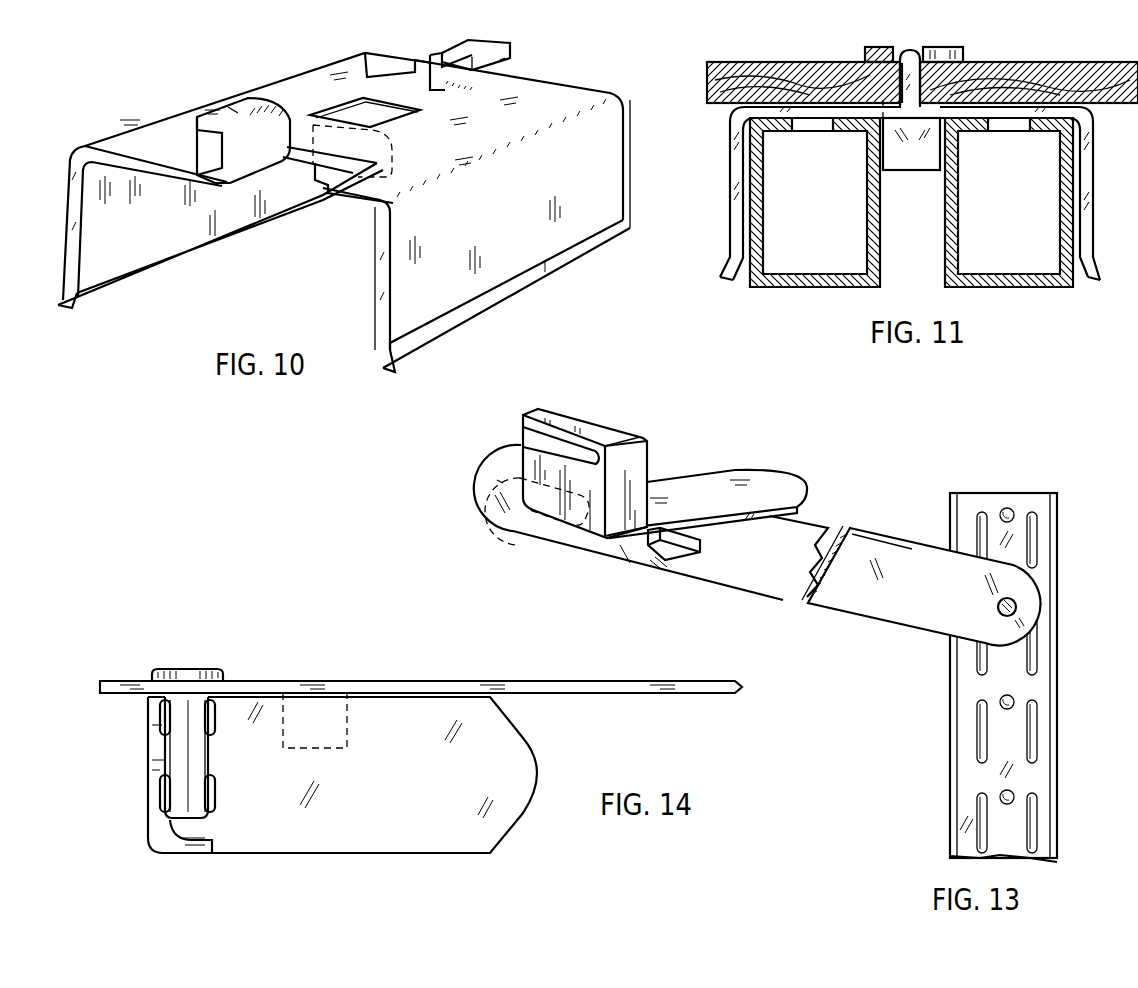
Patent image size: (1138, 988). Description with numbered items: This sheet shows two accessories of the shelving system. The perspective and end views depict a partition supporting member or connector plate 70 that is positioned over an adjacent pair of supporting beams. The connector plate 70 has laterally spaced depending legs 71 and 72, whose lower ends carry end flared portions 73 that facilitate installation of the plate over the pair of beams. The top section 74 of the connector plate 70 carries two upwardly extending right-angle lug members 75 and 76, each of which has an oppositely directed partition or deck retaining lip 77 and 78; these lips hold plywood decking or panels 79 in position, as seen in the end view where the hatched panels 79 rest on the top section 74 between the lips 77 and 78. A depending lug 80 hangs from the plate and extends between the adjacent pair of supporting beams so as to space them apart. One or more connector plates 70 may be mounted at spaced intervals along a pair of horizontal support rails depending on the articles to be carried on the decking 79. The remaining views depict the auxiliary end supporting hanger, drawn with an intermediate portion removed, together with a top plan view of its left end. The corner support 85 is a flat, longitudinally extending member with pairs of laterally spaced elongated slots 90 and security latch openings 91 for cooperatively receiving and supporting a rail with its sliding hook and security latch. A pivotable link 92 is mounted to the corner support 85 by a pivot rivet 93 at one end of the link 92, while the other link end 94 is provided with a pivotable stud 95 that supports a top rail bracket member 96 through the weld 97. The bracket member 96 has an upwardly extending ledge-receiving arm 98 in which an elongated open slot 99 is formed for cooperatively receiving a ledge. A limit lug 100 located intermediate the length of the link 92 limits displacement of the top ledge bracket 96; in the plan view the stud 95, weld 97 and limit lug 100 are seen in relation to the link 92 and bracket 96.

In FIG. 10, the partition supporting member 70 is at (351, 191).
In FIG. 10, the depending leg 71 is at (492, 249).
In FIG. 11, the depending leg 71 is at (1085, 235).
In FIG. 10, the depending leg 72 is at (134, 242).
In FIG. 11, the depending leg 72 is at (736, 166).
In FIG. 10, the end flared portion 73 is at (88, 298).
In FIG. 10, the top section 74 is at (449, 132).
In FIG. 10, the right-angle lug member 75 is at (482, 44).
In FIG. 10, the right-angle lug member 76 is at (251, 154).
In FIG. 10, the deck retaining lip 77 is at (500, 60).
In FIG. 11, the deck retaining lip 77 is at (945, 47).
In FIG. 10, the deck retaining lip 78 is at (228, 107).
In FIG. 11, the deck retaining lip 78 is at (896, 48).
In FIG. 11, the plywood decking or panel 79 is at (790, 62).
In FIG. 10, the depending lug 80 is at (315, 168).
In FIG. 11, the depending lug 80 is at (925, 166).
In FIG. 13, the corner support 85 is at (1006, 661).
In FIG. 13, the elongated slots 90 is at (957, 514).
In FIG. 13, the security latch openings 91 is at (1010, 508).
In FIG. 13, the pivotable link 92 is at (768, 545).
In FIG. 14, the pivotable link 92 is at (560, 680).
In FIG. 13, the pivot rivet 93 is at (1014, 600).
In FIG. 13, the link end 94 is at (497, 480).
In FIG. 13, the pivotable stud 95 is at (543, 497).
In FIG. 14, the pivotable stud 95 is at (195, 675).
In FIG. 13, the top rail bracket member 96 is at (640, 488).
In FIG. 14, the top rail bracket member 96 is at (319, 747).
In FIG. 14, the weld 97 is at (165, 710).
In FIG. 13, the ledge-receiving arm 98 is at (587, 473).
In FIG. 13, the elongated open slot 99 is at (553, 443).
In FIG. 13, the limit lug 100 is at (707, 543).
In FIG. 14, the limit lug 100 is at (348, 727).